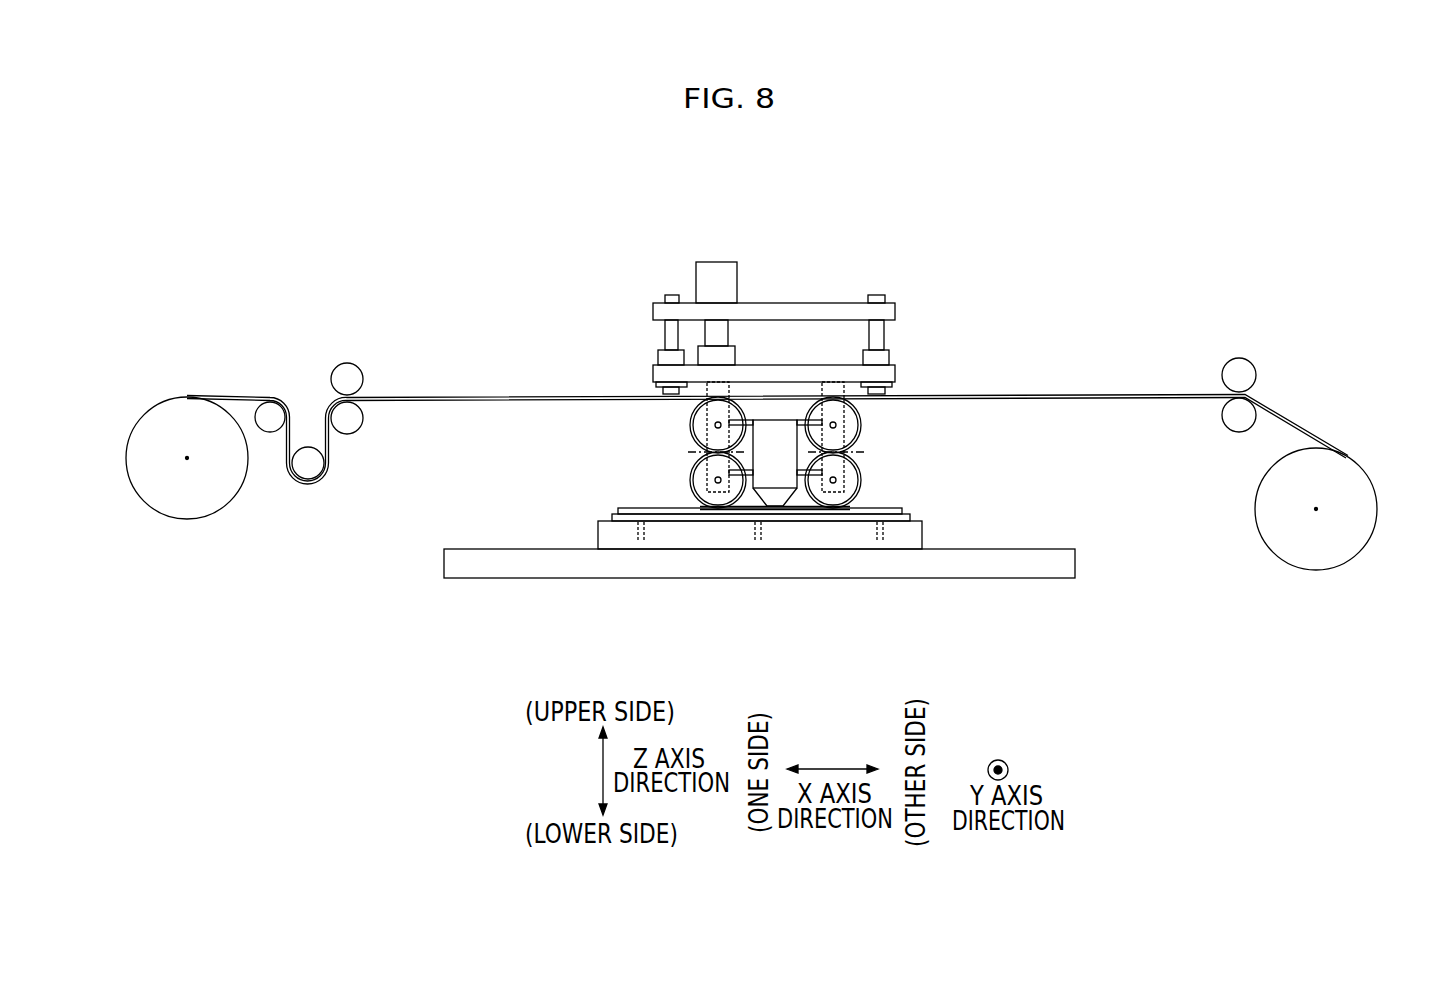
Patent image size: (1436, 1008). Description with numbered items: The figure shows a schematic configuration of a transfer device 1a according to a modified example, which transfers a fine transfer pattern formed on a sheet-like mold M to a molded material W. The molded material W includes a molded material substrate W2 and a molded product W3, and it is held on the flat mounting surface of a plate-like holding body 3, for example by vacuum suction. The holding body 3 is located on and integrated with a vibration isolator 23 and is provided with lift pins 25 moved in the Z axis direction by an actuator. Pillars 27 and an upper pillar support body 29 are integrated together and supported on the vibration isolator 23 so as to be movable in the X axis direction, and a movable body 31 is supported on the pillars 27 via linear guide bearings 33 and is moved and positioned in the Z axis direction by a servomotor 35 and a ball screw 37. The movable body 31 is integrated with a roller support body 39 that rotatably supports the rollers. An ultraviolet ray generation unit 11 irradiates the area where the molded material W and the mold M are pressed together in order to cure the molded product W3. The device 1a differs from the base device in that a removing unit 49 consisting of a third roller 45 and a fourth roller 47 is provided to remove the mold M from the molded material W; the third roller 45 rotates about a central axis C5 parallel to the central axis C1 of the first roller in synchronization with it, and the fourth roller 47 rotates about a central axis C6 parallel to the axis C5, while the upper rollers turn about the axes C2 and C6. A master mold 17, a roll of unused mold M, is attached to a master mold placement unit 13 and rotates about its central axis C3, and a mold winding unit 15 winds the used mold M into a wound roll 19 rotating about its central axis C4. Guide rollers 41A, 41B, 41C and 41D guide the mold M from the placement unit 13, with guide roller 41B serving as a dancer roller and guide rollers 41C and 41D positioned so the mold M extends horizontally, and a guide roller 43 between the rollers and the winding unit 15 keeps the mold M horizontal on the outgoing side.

The transfer device 1a is at (832, 395).
The holding body 3 is at (828, 541).
The ultraviolet ray generation unit 11 is at (776, 490).
The master mold placement unit 13 is at (192, 445).
The mold winding unit 15 is at (1300, 493).
The master mold 17 is at (222, 495).
The wound roll 19 is at (1258, 522).
The vibration isolator 23 is at (925, 568).
The lift pins 25 is at (642, 524).
The pillars 27 is at (664, 335).
The upper pillar support body 29 is at (832, 302).
The movable body 31 is at (896, 376).
The linear guide bearings 33 is at (657, 359).
The servomotor 35 is at (717, 261).
The ball screw 37 is at (729, 334).
The roller support body 39 is at (778, 445).
The guide roller 41A is at (270, 412).
The guide roller 41B is at (308, 468).
The guide roller 41C is at (351, 424).
The guide roller 41D is at (347, 375).
The guide roller 43 is at (1240, 370).
The third roller 45 is at (870, 492).
The fourth roller 47 is at (870, 437).
The removing unit 49 is at (978, 456).
The sheet-like mold M is at (484, 394).
The molded material W is at (773, 544).
The molded material substrate W2 is at (683, 522).
The molded product W3 is at (892, 510).
The central axis of the first roller C1 is at (714, 480).
The roller axis C2 is at (714, 425).
The central axis of the master mold C3 is at (187, 460).
The central axis of the wound roll C4 is at (1316, 511).
The central axis of the third roller C5 is at (837, 480).
The central axis of the fourth roller C6 is at (837, 425).